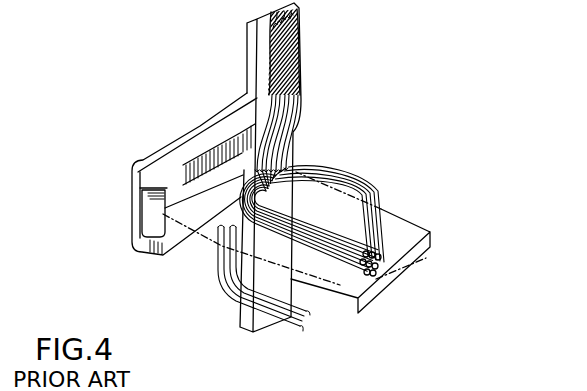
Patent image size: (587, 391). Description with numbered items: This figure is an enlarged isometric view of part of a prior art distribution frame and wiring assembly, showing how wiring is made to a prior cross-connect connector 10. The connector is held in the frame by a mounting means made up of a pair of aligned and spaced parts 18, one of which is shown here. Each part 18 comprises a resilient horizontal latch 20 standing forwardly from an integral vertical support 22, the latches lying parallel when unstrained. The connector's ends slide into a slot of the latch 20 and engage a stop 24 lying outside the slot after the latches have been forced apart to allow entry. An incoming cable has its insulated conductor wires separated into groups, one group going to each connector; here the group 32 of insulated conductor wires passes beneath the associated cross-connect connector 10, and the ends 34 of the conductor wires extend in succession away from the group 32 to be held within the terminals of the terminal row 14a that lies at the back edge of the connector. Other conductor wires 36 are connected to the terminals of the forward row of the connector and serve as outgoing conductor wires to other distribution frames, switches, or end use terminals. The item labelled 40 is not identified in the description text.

The cross-connect connector 10 is at (403, 217).
The terminal row 14a is at (292, 172).
The part 18 is at (129, 162).
The resilient horizontal latch 20 is at (172, 160).
The vertical support 22 is at (246, 40).
The stop 24 is at (236, 114).
The group of insulated conductor wires 32 is at (294, 70).
The ends of the conductor wires 34 is at (362, 202).
The other conductor wires 36 is at (220, 283).
The connector 40 is at (388, 390).